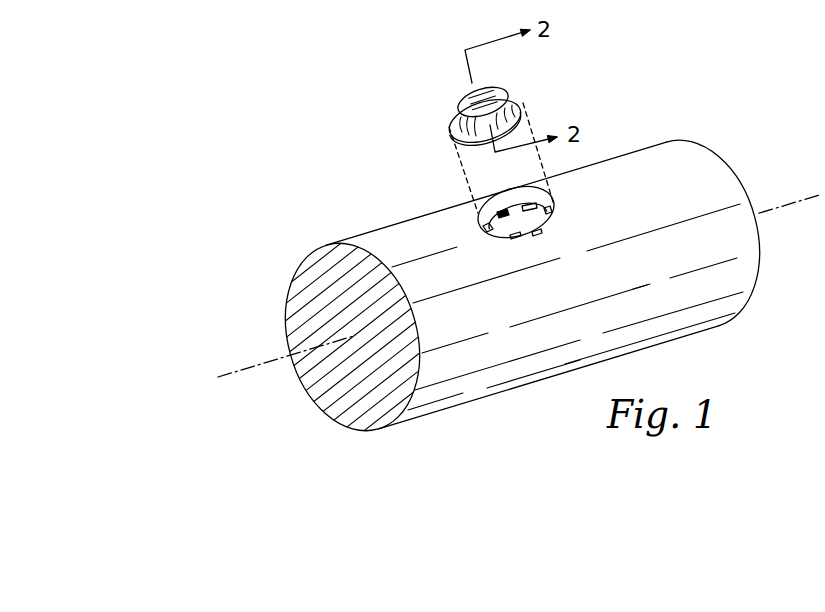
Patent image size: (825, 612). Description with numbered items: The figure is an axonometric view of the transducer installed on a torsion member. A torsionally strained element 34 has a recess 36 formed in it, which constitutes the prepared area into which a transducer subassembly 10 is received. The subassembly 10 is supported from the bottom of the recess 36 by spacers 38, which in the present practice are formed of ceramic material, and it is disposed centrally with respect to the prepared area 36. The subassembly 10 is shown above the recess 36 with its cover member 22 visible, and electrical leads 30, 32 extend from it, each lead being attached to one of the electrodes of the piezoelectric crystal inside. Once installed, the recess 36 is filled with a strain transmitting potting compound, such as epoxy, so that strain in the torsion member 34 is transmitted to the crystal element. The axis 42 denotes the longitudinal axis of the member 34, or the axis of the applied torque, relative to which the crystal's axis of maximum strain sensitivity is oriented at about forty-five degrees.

The transducer subassembly 10 is at (502, 92).
The cover member 22 is at (450, 92).
The electrical lead 30 is at (527, 96).
The electrical lead 32 is at (527, 98).
The torsionally strained element 34 is at (418, 222).
The recess 36 is at (497, 191).
The spacers 38 is at (540, 242).
The axis 42 is at (250, 366).